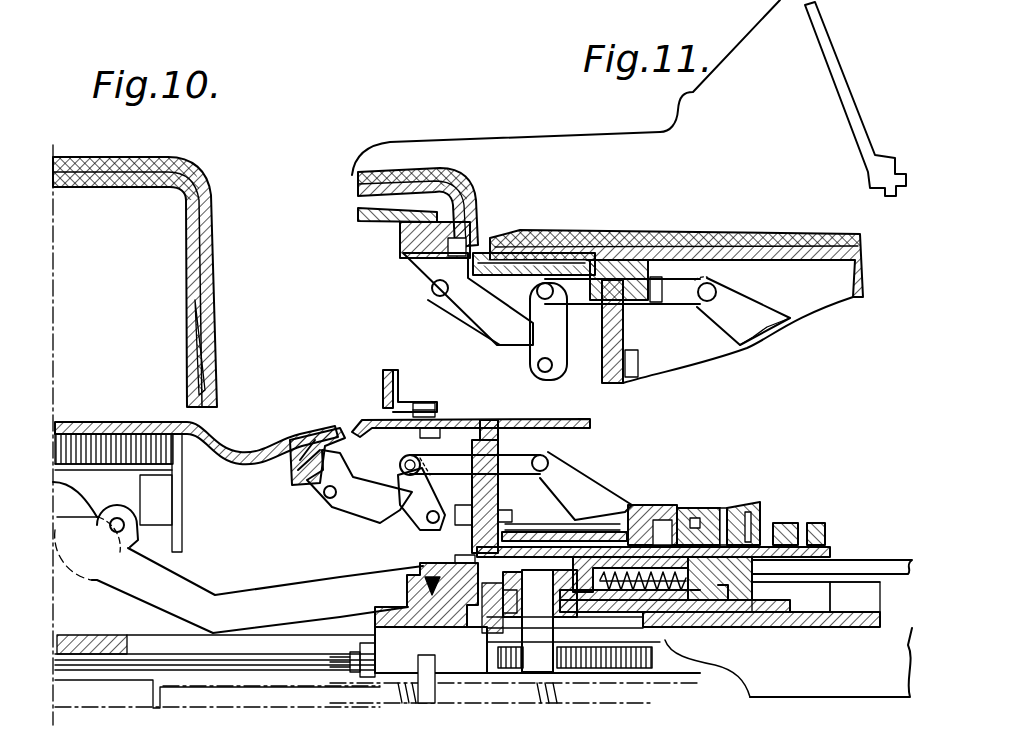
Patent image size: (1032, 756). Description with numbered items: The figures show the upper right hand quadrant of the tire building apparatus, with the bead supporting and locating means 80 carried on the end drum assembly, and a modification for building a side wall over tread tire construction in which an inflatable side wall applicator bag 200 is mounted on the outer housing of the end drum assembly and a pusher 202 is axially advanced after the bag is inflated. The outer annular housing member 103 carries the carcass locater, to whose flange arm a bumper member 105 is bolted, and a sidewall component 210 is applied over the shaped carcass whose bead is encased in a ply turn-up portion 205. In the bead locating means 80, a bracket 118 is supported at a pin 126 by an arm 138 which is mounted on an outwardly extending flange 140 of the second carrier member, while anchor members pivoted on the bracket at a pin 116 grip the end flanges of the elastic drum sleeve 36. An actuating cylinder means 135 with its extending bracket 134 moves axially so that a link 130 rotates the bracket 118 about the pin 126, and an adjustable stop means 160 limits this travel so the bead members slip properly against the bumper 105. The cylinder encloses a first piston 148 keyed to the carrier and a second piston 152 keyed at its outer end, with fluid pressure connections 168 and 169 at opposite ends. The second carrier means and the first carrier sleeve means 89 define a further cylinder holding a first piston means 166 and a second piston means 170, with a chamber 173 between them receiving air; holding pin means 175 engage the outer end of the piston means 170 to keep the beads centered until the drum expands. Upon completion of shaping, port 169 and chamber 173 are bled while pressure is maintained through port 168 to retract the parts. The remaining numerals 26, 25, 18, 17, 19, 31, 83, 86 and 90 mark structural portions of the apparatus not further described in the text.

In FIG. 10, the frame 26 is at (203, 7).
In FIG. 10, the sidewall component 210 is at (208, 272).
In FIG. 10, the elastic drum sleeve 36 is at (130, 420).
In FIG. 10, the hub 25 is at (55, 603).
In FIG. 10, the pivot 18 is at (117, 533).
In FIG. 10, the lever arm 17 is at (222, 598).
In FIG. 11, the pusher 202 is at (857, 118).
In FIG. 11, the ply turn-up portion 205 is at (470, 216).
In FIG. 11, the inflatable side wall applicator bag 200 is at (763, 215).
In FIG. 11, the outwardly extending flange 140 is at (624, 332).
In FIG. 11, the arm 138 is at (575, 360).
In FIG. 11, the pin 116 is at (438, 294).
In FIG. 11, the bracket 118 is at (485, 345).
In FIG. 11, the pin 126 is at (538, 366).
In FIG. 11, the link 130 is at (688, 304).
In FIG. 11, the extending bracket 134 is at (758, 316).
In FIG. 11, the bumper member 105 is at (385, 385).
In FIG. 11, the outer annular housing member 103 is at (560, 420).
In FIG. 11, the bead supporting and locating means 80 is at (318, 428).
In FIG. 11, the actuating cylinder means 135 is at (527, 532).
In FIG. 11, the block 19 is at (428, 575).
In FIG. 11, the housing 31 is at (468, 658).
In FIG. 11, the cylinder 83 is at (552, 595).
In FIG. 11, the rack 86 is at (580, 660).
In FIG. 11, the fluid pressure connection 168 is at (656, 505).
In FIG. 11, the first piston 148 is at (695, 508).
In FIG. 11, the fluid pressure connection 169 is at (721, 508).
In FIG. 11, the second piston 152 is at (736, 505).
In FIG. 11, the stop means 160 is at (814, 523).
In FIG. 11, the holding pin means 175 is at (856, 560).
In FIG. 11, the first carrier sleeve means 89 is at (780, 605).
In FIG. 11, the box 90 is at (873, 609).
In FIG. 11, the second piston means 170 is at (756, 600).
In FIG. 11, the chamber 173 is at (722, 602).
In FIG. 11, the first piston means 166 is at (692, 600).